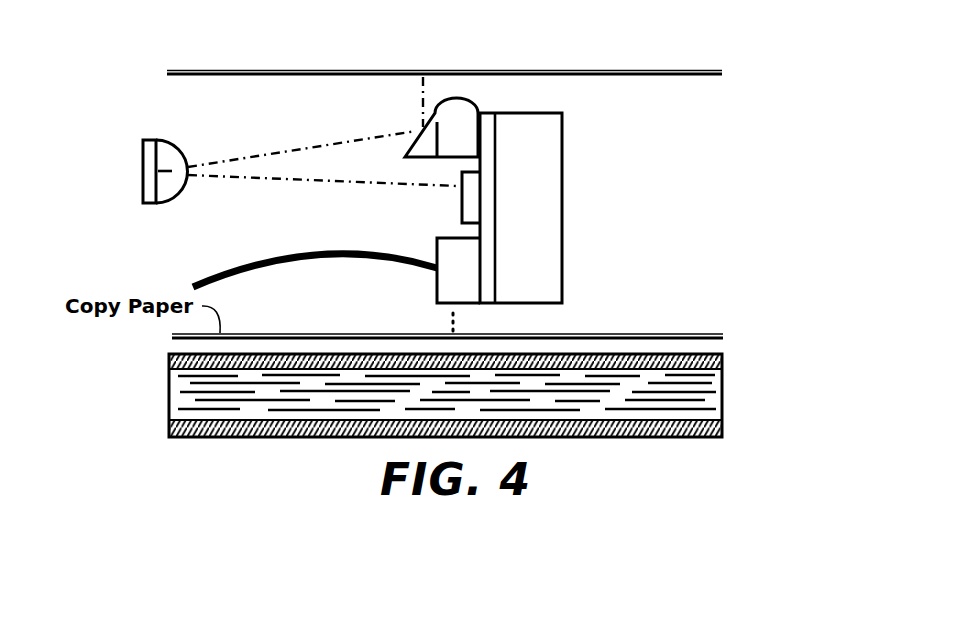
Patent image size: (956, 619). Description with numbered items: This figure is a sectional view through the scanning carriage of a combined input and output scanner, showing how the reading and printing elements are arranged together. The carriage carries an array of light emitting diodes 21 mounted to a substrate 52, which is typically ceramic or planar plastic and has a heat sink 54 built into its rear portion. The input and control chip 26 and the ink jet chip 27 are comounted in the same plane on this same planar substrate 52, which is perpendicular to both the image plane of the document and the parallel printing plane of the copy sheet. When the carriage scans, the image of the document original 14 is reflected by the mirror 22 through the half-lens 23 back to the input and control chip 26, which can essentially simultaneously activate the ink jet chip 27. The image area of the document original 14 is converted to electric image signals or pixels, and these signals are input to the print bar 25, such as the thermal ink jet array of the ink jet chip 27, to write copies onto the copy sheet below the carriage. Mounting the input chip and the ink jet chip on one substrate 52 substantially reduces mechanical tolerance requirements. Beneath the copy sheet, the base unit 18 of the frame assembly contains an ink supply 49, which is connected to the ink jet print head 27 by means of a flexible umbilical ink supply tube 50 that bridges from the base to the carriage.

The document original 14 is at (316, 70).
The base unit 18 is at (723, 353).
The array of light emitting diodes 21 is at (460, 98).
The mirror 22 is at (410, 150).
The half-lens 23 is at (175, 203).
The print bar 25 is at (460, 282).
The input and control chip 26 is at (462, 222).
The ink jet chip 27 is at (440, 306).
The ink supply 49 is at (700, 387).
The flexible umbilical ink supply tube 50 is at (295, 253).
The substrate 52 is at (487, 188).
The heat sink 54 is at (562, 232).